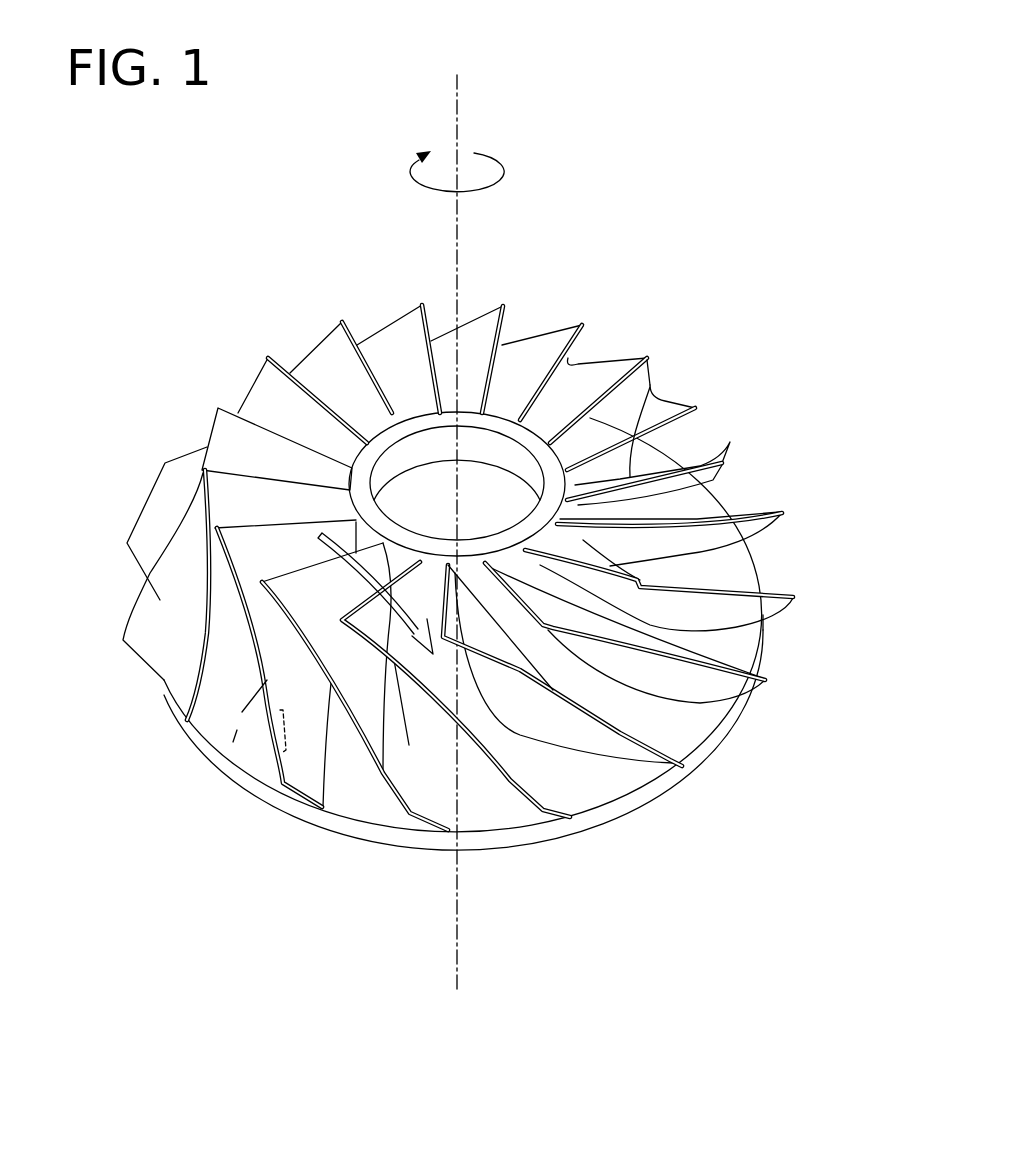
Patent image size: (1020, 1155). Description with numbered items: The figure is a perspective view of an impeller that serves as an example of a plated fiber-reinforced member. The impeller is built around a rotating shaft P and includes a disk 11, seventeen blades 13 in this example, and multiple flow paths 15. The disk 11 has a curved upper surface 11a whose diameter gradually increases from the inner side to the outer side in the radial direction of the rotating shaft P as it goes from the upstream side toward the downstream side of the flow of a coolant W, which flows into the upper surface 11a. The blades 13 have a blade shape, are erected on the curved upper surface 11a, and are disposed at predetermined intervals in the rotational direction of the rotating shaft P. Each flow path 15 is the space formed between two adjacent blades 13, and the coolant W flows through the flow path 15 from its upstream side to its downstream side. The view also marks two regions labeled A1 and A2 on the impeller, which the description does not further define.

The disk 11 is at (744, 656).
The upper surface 11a is at (633, 565).
The blades 13 is at (232, 625).
The flow paths 15 is at (548, 766).
The rotating shaft P is at (457, 137).
The coolant W is at (385, 780).
The region A1 is at (281, 711).
The region A2 is at (283, 752).